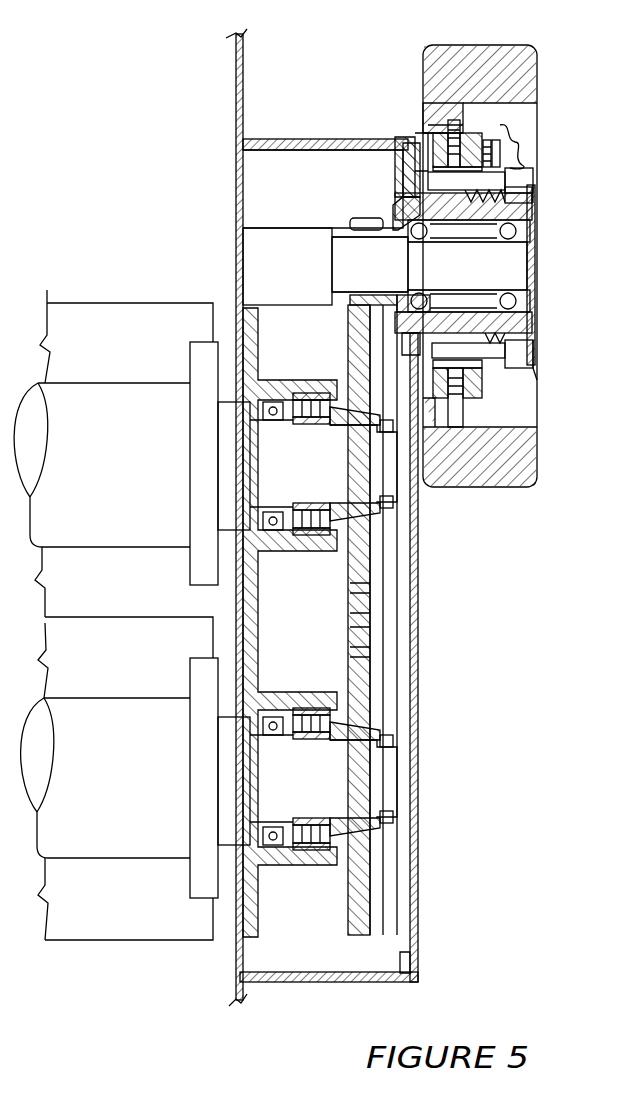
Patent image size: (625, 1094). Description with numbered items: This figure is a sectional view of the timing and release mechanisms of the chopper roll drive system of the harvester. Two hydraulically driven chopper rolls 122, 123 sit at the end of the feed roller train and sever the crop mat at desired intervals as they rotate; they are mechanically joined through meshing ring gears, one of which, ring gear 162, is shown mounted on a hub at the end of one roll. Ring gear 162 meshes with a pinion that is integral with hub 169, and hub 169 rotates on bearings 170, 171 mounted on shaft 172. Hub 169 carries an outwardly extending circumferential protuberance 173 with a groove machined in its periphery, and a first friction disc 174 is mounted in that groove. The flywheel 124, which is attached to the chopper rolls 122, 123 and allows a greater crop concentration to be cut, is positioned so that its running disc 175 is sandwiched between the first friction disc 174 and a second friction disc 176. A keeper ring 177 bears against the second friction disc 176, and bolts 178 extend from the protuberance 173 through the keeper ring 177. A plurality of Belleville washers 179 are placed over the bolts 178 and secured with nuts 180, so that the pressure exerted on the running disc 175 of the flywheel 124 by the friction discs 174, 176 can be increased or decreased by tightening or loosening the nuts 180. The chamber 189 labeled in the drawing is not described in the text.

The chopper roll 122 is at (118, 538).
The chopper roll 123 is at (117, 727).
The flywheel 124 is at (535, 462).
The ring gear 162 is at (363, 607).
The hub 169 is at (533, 352).
The bearing 170 is at (530, 235).
The bearing 171 is at (520, 312).
The shaft 172 is at (520, 280).
The circumferential protuberance 173 is at (412, 133).
The first friction disc 174 is at (450, 128).
The running disc 175 is at (452, 118).
The second friction disc 176 is at (478, 140).
The keeper ring 177 is at (497, 145).
The bolts 178 is at (533, 170).
The Belleville washers 179 is at (505, 140).
The nuts 180 is at (532, 196).
The housing chamber 189 is at (331, 184).